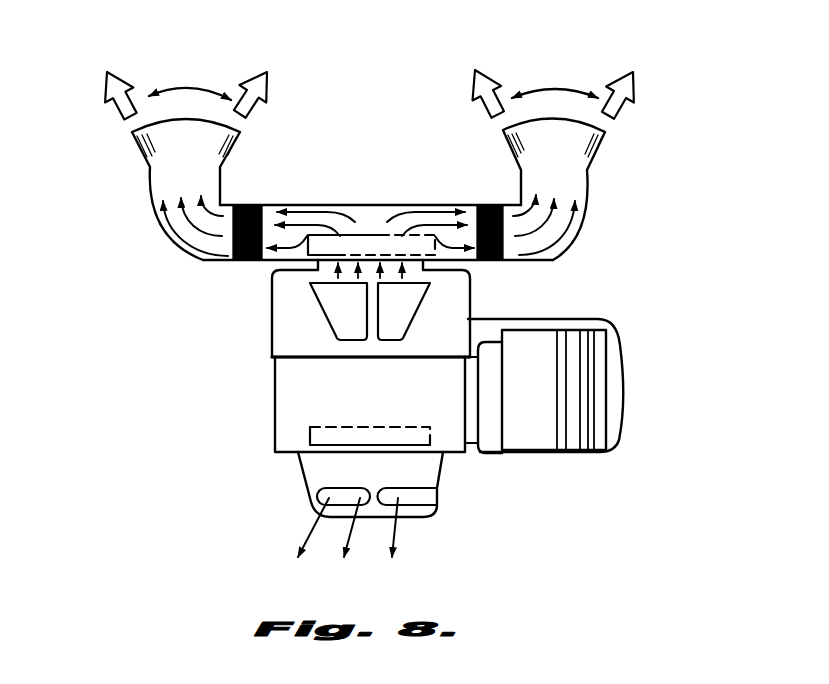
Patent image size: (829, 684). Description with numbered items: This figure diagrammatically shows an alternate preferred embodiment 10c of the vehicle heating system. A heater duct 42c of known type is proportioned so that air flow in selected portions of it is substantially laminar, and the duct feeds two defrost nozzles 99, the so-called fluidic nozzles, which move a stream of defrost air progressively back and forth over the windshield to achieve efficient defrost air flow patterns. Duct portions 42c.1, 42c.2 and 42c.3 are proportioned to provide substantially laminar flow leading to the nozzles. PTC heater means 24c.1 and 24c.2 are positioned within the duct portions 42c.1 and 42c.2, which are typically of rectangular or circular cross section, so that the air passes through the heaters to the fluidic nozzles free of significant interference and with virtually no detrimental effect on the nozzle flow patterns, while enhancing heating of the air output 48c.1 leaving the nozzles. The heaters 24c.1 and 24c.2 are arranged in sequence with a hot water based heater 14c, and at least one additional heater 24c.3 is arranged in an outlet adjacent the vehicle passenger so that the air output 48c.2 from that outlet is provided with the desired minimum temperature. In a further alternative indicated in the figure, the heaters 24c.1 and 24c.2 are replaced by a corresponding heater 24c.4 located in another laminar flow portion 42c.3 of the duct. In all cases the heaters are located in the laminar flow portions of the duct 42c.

The alternate preferred embodiment 10c is at (596, 61).
The hot water based heater 14c is at (597, 387).
The PTC heater means 24c.1 is at (248, 203).
The PTC heater means 24c.2 is at (488, 203).
The additional heater 24c.3 is at (323, 445).
The heater 24c.4 is at (440, 256).
The heater duct 42c is at (335, 437).
The duct portion 42c.1 is at (225, 252).
The duct portion 42c.2 is at (515, 252).
The laminar flow portion 42c.3 is at (327, 272).
The air output 48c.1 is at (127, 107).
The air output 48c.2 is at (305, 538).
The defrost nozzle 99 is at (180, 167).